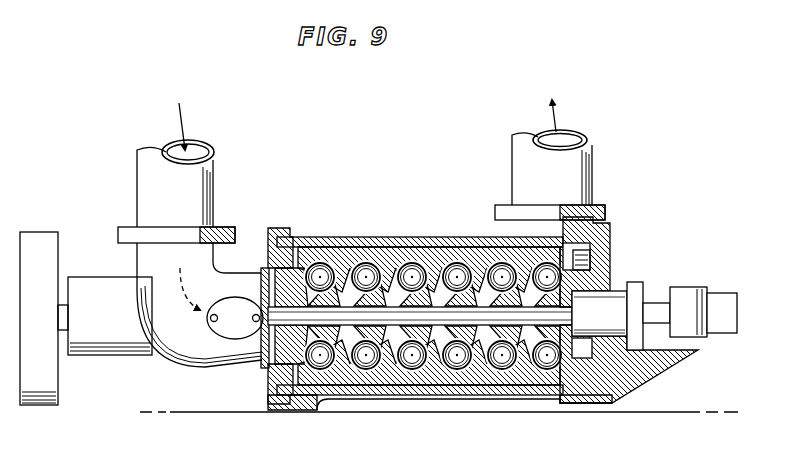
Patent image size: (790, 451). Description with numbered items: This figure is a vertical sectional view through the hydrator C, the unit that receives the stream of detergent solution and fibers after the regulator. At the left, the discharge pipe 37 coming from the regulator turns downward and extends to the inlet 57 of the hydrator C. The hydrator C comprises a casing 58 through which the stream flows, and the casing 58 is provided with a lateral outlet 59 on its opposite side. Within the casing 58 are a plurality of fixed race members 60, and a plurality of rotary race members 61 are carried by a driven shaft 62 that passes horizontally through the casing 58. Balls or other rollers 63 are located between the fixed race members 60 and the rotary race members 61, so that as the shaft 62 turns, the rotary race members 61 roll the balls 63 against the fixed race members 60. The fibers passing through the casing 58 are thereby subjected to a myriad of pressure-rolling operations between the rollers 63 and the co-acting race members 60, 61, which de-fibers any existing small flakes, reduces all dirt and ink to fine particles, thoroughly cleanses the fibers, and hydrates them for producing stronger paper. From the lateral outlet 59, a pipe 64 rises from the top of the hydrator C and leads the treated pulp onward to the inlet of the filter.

The discharge pipe 37 is at (176, 173).
The inlet 57 is at (209, 318).
The casing 58 is at (357, 238).
The lateral outlet 59 is at (594, 218).
The fixed race members 60 is at (513, 247).
The rotary race members 61 is at (377, 392).
The driven shaft 62 is at (262, 378).
The balls or rollers 63 is at (320, 266).
The pipe 64 is at (550, 160).
The hydrator C is at (502, 324).